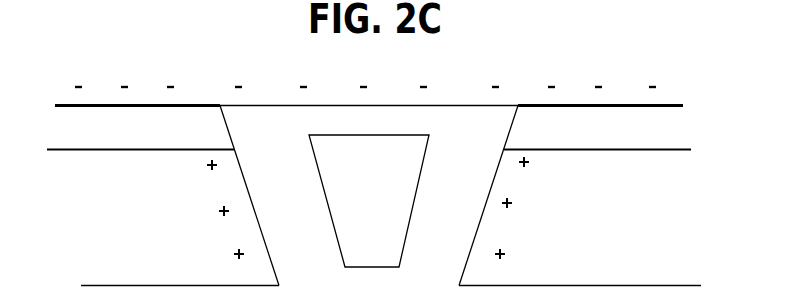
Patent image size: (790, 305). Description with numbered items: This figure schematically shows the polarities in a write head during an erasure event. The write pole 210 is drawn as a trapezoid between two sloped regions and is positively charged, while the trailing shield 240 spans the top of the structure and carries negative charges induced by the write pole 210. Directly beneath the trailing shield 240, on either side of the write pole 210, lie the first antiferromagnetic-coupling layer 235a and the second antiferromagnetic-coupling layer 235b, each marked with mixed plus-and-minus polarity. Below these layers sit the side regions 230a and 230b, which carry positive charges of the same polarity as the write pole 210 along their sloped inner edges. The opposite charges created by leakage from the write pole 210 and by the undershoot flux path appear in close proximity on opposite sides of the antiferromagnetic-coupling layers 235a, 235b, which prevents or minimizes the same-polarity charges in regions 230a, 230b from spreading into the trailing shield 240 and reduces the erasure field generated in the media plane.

The trailing shield 240 is at (402, 72).
The first antiferromagnetic-coupling layer 235a is at (149, 136).
The second antiferromagnetic-coupling layer 235b is at (638, 144).
The first positively doped region 230a is at (168, 210).
The second positively doped region 230b is at (616, 206).
The write pole 210 is at (395, 192).